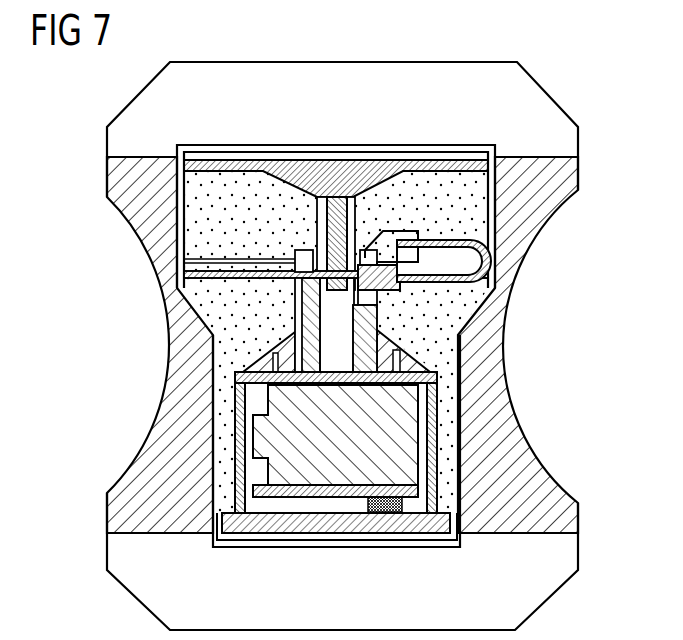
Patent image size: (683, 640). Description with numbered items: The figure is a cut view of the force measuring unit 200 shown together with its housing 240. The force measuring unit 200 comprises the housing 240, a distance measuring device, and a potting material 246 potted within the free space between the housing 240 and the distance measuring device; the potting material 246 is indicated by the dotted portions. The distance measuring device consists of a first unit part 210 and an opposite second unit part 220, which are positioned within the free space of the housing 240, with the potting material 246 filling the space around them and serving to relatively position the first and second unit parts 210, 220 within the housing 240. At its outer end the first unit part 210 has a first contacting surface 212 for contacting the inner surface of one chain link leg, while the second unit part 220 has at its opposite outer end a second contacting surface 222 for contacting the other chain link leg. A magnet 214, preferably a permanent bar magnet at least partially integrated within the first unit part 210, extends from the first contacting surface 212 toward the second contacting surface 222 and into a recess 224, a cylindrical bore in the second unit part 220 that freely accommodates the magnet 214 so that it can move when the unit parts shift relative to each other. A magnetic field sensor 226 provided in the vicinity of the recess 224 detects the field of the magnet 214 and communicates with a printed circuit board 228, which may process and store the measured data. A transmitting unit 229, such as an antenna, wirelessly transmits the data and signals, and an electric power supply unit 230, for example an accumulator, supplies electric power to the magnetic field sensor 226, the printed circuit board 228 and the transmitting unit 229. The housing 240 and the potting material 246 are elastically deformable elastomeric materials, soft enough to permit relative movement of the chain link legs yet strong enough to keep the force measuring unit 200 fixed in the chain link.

The force measuring unit 200 is at (584, 91).
The first unit part 210 is at (462, 195).
The first contacting surface 212 is at (253, 160).
The magnet 214 is at (327, 227).
The second unit part 220 is at (232, 402).
The second contacting surface 222 is at (288, 538).
The recess 224 is at (334, 340).
The magnetic field sensor 226 is at (400, 288).
The printed circuit board 228 is at (458, 277).
The transmitting unit 229 is at (192, 273).
The electric power supply unit 230 is at (405, 426).
The housing 240 is at (555, 493).
The potting material 246 is at (472, 212).